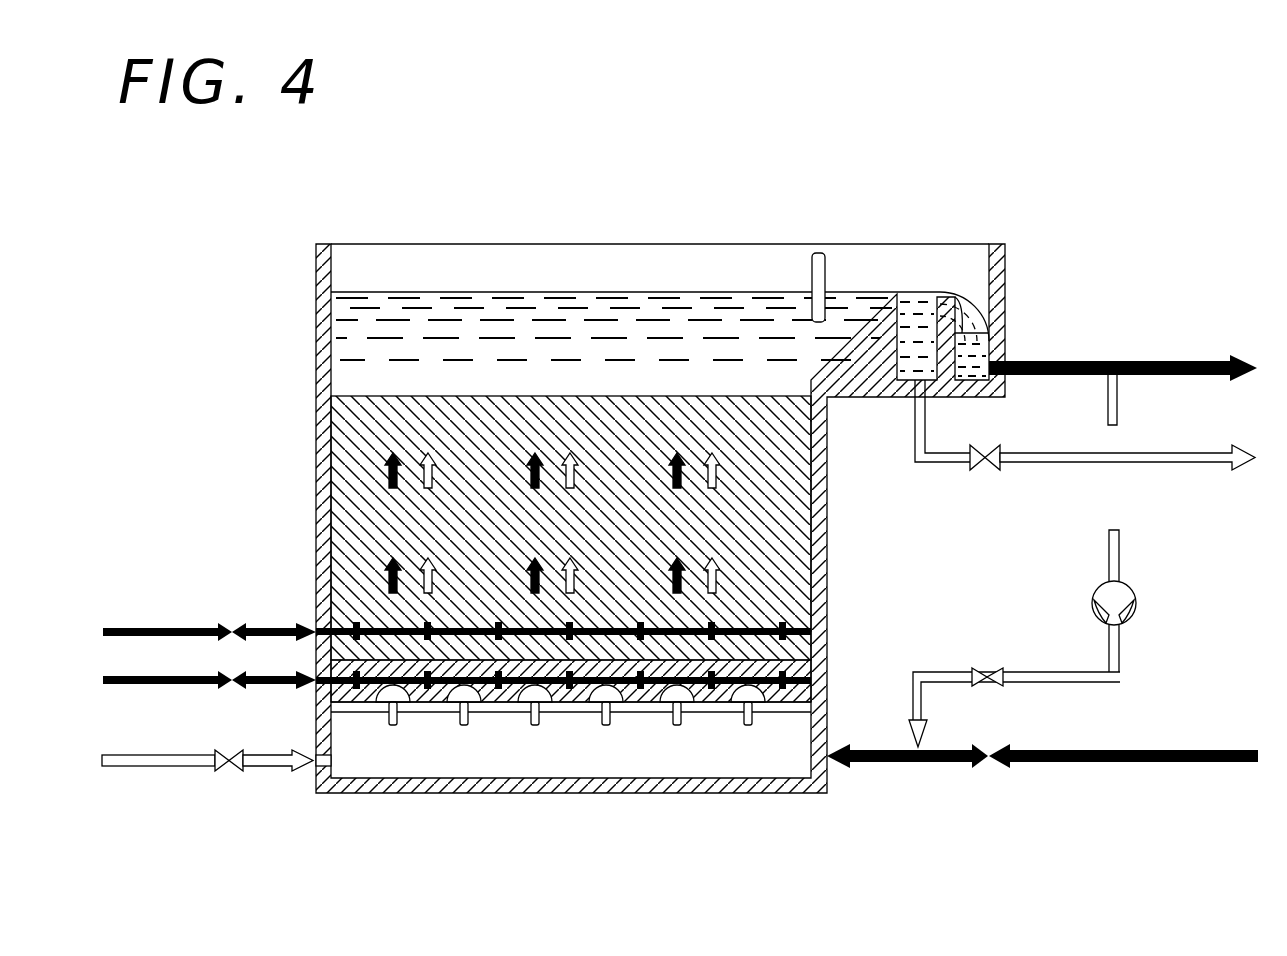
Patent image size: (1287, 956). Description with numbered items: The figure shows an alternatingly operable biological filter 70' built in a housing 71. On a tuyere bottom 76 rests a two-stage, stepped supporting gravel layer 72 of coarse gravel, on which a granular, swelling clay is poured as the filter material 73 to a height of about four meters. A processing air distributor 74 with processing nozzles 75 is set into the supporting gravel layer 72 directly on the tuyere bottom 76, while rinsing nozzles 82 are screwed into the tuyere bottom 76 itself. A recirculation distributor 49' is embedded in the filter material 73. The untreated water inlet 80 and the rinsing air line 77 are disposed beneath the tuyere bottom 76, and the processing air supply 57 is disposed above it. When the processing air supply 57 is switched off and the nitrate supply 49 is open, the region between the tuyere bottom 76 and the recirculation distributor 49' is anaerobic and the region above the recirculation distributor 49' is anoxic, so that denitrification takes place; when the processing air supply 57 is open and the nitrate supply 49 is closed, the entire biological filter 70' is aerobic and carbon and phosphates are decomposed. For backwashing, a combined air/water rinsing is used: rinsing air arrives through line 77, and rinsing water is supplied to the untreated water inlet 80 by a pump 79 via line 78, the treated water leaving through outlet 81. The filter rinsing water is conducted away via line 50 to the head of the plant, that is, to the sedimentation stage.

The biological filter 70' is at (660, 247).
The housing 71 is at (320, 380).
The filter material 73 is at (345, 495).
The processing air distributor 74 is at (797, 668).
The processing nozzles 75 is at (563, 680).
The tuyere bottom 76 is at (797, 708).
The rinsing nozzles 82 is at (676, 690).
The supporting gravel layer 72 is at (330, 693).
The nitrate supply 49 is at (209, 593).
The recirculation distributor 49' is at (610, 613).
The processing air supply 57 is at (177, 687).
The rinsing air supply line 77 is at (165, 767).
The rinsing water line 78 is at (1045, 668).
The pump 79 is at (1137, 590).
The untreated water inlet 80 is at (887, 767).
The outlet line 81 is at (1070, 360).
The filter rinsing water line 50 is at (1210, 452).